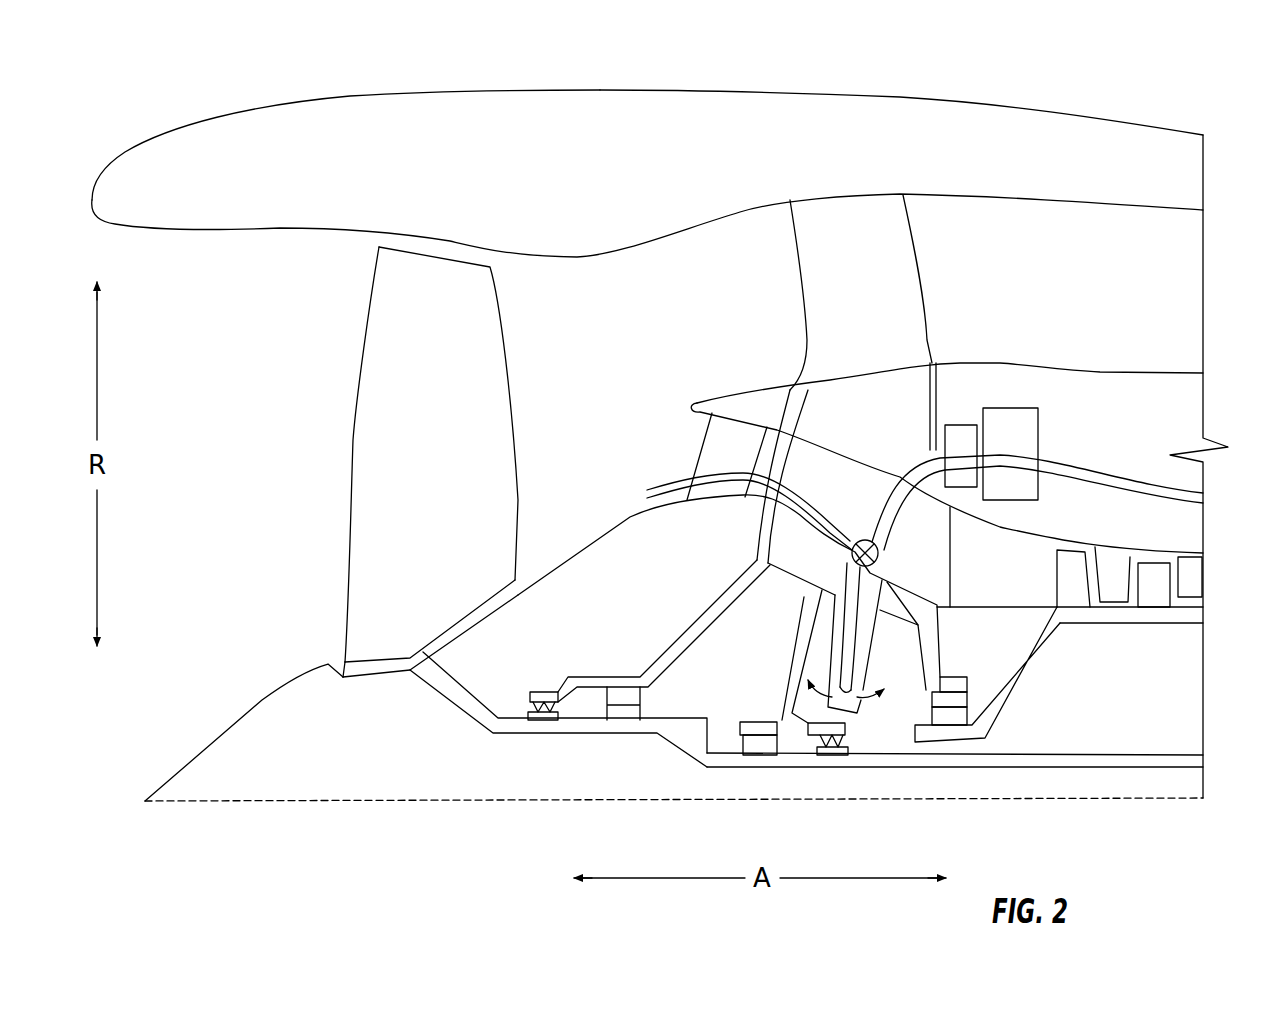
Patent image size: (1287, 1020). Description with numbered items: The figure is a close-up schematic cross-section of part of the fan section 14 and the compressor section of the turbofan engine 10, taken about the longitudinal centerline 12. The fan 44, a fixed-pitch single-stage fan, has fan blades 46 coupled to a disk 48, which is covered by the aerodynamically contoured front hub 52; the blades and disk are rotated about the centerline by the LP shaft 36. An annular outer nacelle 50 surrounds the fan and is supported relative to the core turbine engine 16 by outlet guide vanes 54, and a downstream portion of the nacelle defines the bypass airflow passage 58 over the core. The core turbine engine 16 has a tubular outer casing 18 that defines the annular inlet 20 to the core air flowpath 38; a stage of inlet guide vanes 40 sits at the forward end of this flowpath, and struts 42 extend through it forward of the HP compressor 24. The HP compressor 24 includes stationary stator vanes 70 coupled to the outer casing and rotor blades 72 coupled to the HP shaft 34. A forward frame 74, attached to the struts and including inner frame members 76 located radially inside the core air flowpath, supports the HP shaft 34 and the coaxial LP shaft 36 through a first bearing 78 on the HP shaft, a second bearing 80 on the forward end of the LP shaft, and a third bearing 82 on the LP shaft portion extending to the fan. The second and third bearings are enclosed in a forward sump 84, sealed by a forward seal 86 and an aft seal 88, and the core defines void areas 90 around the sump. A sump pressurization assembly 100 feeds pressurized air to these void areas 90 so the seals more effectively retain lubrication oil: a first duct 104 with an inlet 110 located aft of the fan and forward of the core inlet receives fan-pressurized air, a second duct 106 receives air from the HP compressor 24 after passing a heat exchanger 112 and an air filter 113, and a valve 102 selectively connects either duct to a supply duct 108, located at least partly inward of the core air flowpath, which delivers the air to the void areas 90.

The turbofan engine 10 is at (952, 58).
The longitudinal centerline 12 is at (220, 805).
The fan section 14 is at (540, 160).
The core turbine engine 16 is at (1160, 355).
The outer casing 18 is at (1120, 370).
The annular inlet 20 is at (690, 430).
The high pressure compressor 24 is at (1175, 525).
The high pressure shaft 34 is at (1172, 625).
The low pressure shaft 36 is at (1122, 760).
The core air flowpath 38 is at (1032, 555).
The inlet guide vanes 40 is at (748, 440).
The struts 42 is at (848, 478).
The fan 44 is at (373, 454).
The fan blades 46 is at (353, 440).
The disk 48 is at (378, 678).
The outer nacelle 50 is at (780, 110).
The front hub 52 is at (268, 697).
The outlet guide vanes 54 is at (887, 230).
The bypass airflow passage 58 is at (1028, 299).
The HP compressor stator vanes 70 is at (1193, 573).
The HP compressor rotor blades 72 is at (1157, 590).
The forward frame 74 is at (825, 470).
The inner frame members 76 is at (737, 580).
The first bearing 78 is at (967, 700).
The second bearing 80 is at (725, 749).
The third bearing 82 is at (605, 712).
The forward sump 84 is at (690, 660).
The forward seal 86 is at (519, 697).
The aft seal 88 is at (855, 752).
The void areas 90 is at (578, 614).
The sump pressurization assembly 100 is at (870, 506).
The valve 102 is at (880, 557).
The first duct 104 is at (715, 472).
The second duct 106 is at (1140, 496).
The supply duct 108 is at (862, 637).
The inlet 110 is at (640, 495).
The heat exchanger 112 is at (1038, 428).
The air filter 113 is at (968, 425).